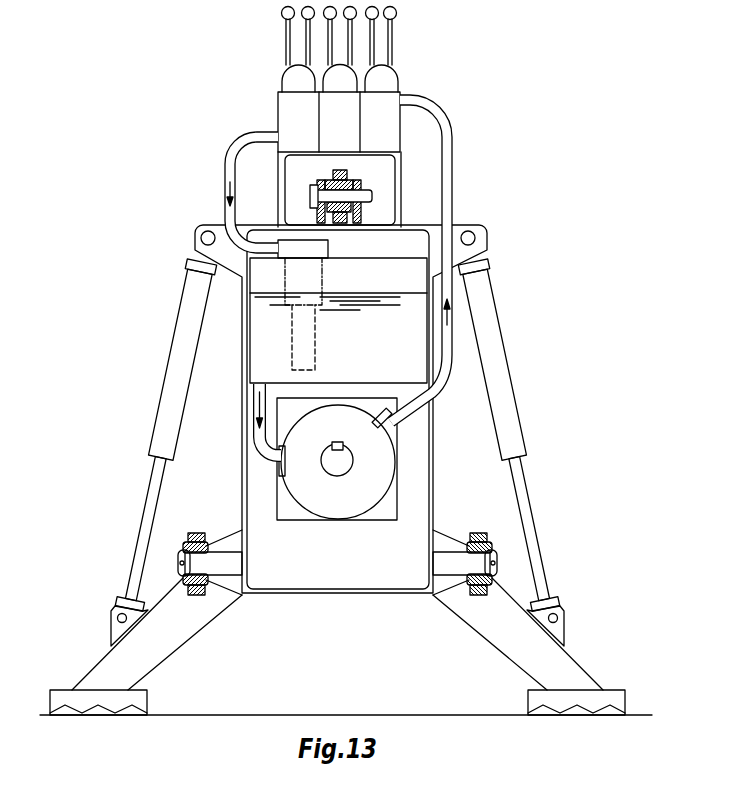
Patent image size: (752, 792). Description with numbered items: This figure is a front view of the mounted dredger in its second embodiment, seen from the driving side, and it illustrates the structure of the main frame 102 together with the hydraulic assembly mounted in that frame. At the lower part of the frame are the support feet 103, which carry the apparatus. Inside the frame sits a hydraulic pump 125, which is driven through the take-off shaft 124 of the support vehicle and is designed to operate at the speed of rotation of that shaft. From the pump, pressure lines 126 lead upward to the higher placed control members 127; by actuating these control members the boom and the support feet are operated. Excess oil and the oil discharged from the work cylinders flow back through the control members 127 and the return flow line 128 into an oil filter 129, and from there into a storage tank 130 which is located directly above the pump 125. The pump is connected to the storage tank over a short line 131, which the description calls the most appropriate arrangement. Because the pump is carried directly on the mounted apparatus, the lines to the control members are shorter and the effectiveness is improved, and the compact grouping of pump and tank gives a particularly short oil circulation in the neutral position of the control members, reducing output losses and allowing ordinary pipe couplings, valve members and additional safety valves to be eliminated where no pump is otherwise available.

The main frame 102 is at (433, 492).
The support feet 103 is at (223, 600).
The take-off shaft 124 is at (335, 468).
The hydraulic pump 125 is at (353, 507).
The pressure lines 126 is at (448, 137).
The control members 127 is at (390, 100).
The return flow line 128 is at (233, 152).
The oil filter 129 is at (300, 272).
The storage tank 130 is at (263, 343).
The short line 131 is at (257, 438).